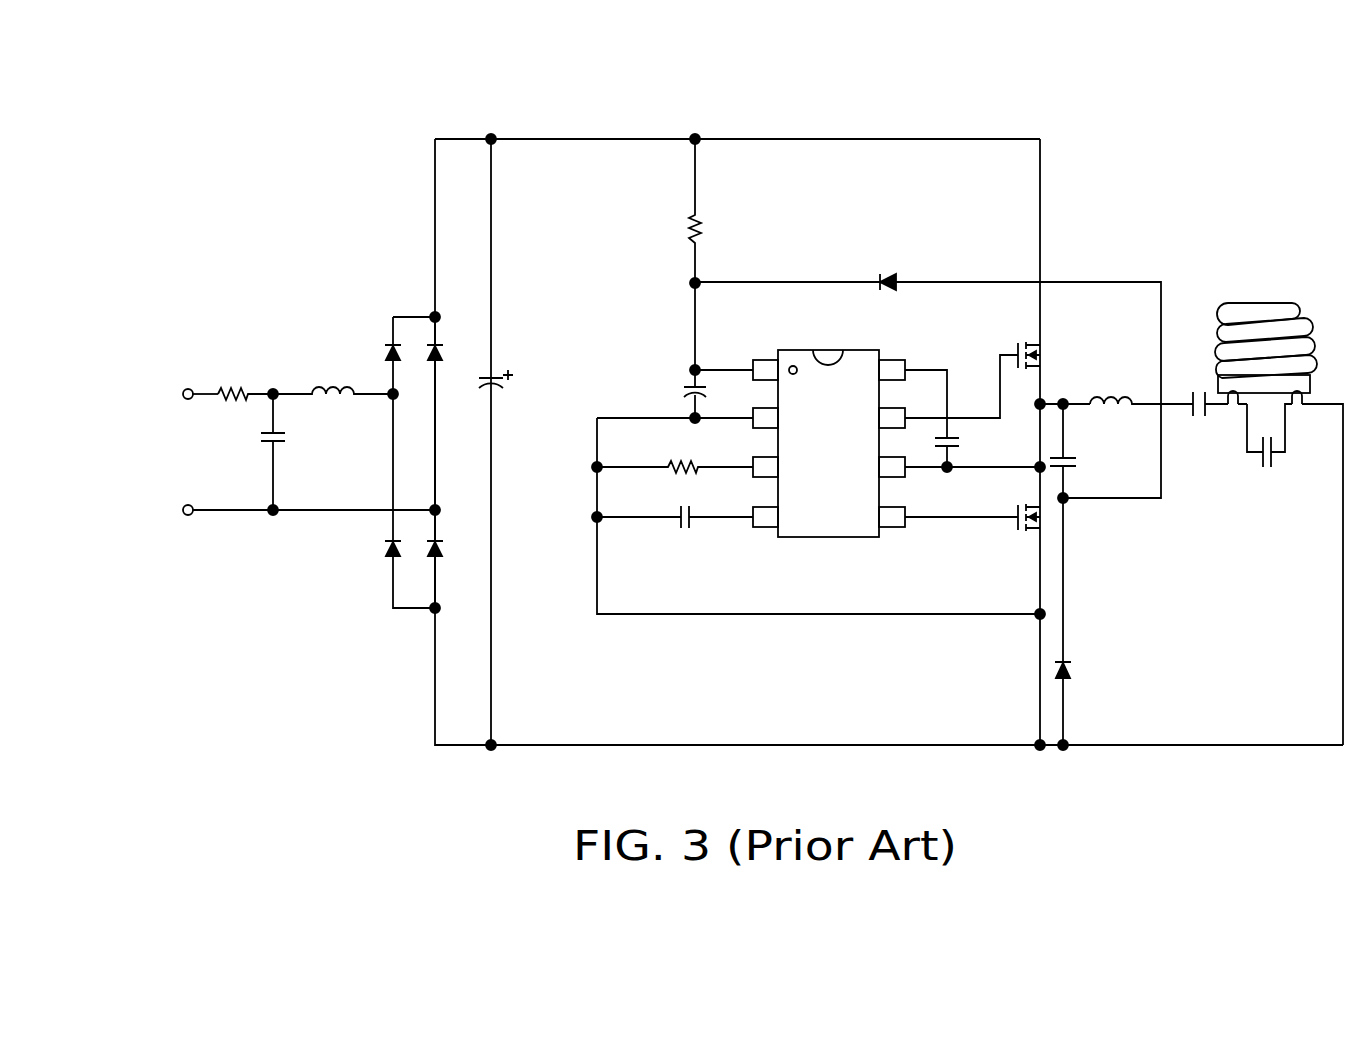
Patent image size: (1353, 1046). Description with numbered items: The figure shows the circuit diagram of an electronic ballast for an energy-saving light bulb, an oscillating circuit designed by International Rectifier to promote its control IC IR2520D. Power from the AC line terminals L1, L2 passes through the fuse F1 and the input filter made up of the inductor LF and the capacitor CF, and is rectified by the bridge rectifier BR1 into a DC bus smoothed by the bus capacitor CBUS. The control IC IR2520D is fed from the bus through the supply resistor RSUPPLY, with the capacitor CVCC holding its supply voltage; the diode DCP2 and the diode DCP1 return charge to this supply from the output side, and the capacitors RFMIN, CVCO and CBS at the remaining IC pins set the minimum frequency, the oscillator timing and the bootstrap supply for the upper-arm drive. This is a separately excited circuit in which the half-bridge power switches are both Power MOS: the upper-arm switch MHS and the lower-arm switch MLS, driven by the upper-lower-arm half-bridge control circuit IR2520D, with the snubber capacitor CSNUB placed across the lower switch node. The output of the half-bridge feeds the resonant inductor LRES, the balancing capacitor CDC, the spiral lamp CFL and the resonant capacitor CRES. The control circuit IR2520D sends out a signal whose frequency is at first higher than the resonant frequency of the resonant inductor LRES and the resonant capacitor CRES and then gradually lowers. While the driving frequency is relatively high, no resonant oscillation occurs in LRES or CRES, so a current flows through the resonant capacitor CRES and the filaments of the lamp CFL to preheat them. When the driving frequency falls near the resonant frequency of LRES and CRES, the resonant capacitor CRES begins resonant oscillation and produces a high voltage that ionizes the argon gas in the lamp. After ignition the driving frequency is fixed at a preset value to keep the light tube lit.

The AC line input terminal L1 is at (187, 394).
The AC line input terminal L2 is at (296, 510).
The fuse F1 is at (245, 383).
The filter inductor LF is at (333, 380).
The filter capacitor CF is at (287, 452).
The bridge rectifier BR1 is at (409, 452).
The bus capacitor CBUS is at (518, 392).
The supply resistor RSUPPLY is at (652, 211).
The charge pump diode DCP2 is at (928, 371).
The VCC supply capacitor CVCC is at (665, 394).
The upper-lower-arm half-bridge control circuit IR2520D is at (818, 437).
The minimum frequency resistor RFMIN is at (675, 479).
The VCO capacitor CVCO is at (675, 531).
The bootstrap capacitor CBS is at (952, 421).
The upper-arm switch MHS is at (972, 371).
The lower-arm switch MLS is at (1010, 529).
The snubber capacitor CSNUB is at (1086, 572).
The charge pump diode DCP1 is at (1090, 670).
The resonant inductor LRES is at (1141, 388).
The balancing capacitor CDC is at (1205, 417).
The spiral compact fluorescent lamp CFL is at (1279, 492).
The resonant capacitor CRES is at (1267, 446).